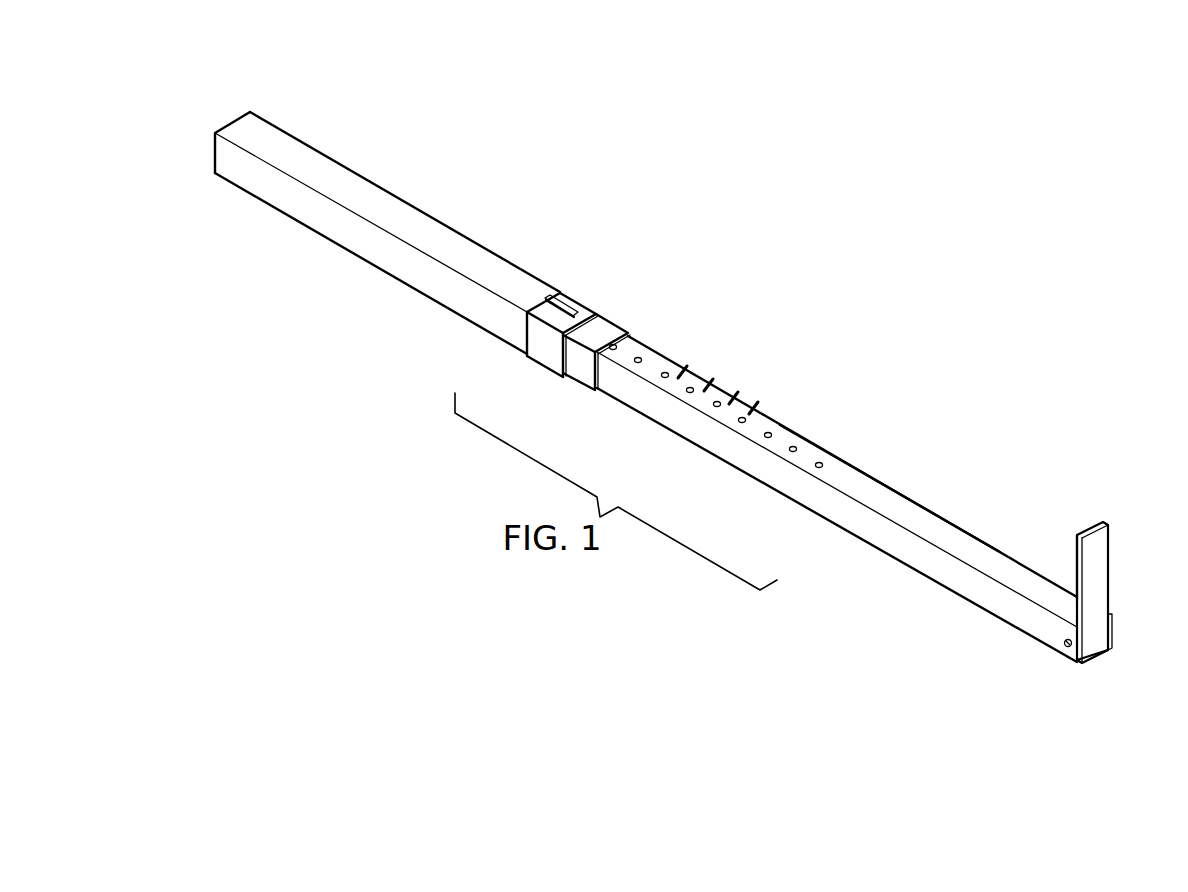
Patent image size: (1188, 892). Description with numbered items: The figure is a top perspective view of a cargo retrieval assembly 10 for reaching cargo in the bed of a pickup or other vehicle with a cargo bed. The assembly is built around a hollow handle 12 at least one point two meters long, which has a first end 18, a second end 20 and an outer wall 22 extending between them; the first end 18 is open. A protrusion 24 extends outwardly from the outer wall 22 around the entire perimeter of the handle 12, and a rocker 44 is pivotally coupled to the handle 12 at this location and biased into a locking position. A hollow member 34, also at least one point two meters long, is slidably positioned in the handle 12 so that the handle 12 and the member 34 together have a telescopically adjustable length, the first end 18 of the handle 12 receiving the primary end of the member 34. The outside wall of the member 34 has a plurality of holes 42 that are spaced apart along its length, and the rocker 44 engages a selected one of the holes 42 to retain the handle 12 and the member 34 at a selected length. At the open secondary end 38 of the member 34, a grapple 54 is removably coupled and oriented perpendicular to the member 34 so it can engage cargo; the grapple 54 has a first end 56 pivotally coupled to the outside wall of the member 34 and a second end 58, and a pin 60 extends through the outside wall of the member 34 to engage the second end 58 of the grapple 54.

The cargo retrieval assembly 10 is at (830, 214).
The handle 12 is at (386, 189).
The first end 18 is at (643, 347).
The second end 20 is at (234, 121).
The outer wall 22 is at (428, 236).
The protrusion 24 is at (592, 307).
The member 34 is at (847, 463).
The secondary end 38 is at (1108, 657).
The holes 42 is at (684, 371).
The rocker 44 is at (566, 300).
The grapple 54 is at (1108, 538).
The first end 56 is at (1089, 522).
The second end 58 is at (1093, 669).
The pin 60 is at (1063, 645).